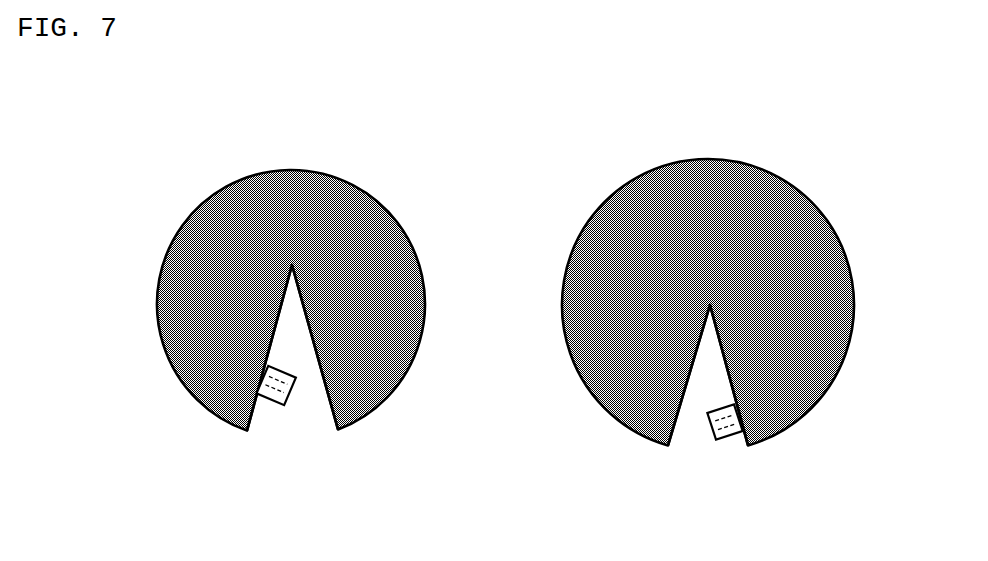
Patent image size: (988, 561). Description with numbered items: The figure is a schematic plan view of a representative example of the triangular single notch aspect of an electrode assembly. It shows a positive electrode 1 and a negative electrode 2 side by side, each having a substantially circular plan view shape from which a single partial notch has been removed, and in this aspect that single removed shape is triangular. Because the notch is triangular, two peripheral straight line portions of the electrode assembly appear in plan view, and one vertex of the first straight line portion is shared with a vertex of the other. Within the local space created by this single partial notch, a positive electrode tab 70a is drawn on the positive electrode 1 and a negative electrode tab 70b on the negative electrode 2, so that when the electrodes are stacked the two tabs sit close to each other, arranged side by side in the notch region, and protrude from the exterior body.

The positive electrode 1 is at (281, 280).
The negative electrode 2 is at (730, 293).
The positive electrode tab 70a is at (277, 400).
The negative electrode tab 70b is at (727, 436).